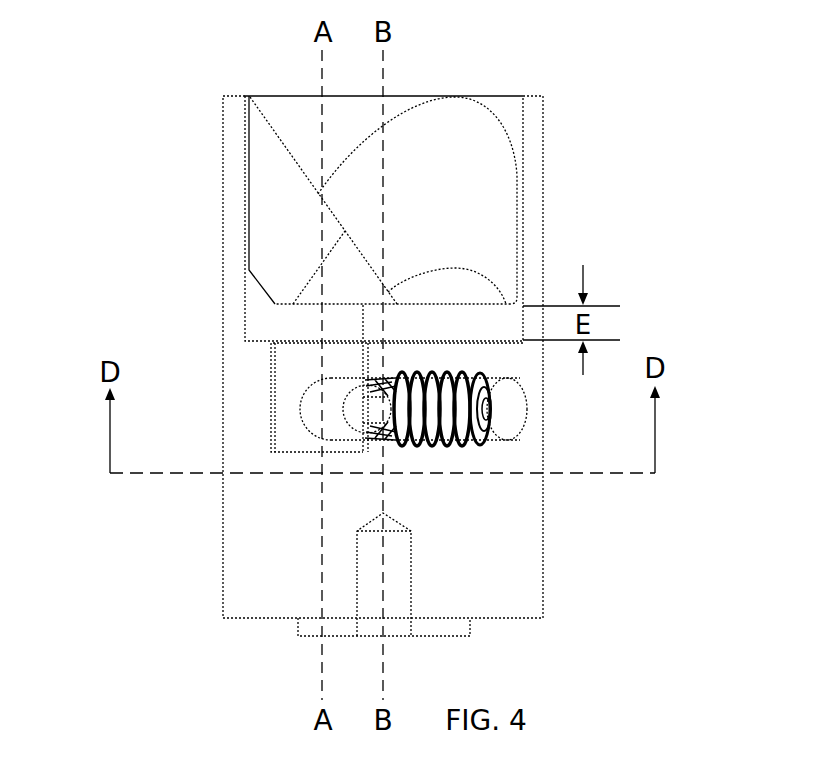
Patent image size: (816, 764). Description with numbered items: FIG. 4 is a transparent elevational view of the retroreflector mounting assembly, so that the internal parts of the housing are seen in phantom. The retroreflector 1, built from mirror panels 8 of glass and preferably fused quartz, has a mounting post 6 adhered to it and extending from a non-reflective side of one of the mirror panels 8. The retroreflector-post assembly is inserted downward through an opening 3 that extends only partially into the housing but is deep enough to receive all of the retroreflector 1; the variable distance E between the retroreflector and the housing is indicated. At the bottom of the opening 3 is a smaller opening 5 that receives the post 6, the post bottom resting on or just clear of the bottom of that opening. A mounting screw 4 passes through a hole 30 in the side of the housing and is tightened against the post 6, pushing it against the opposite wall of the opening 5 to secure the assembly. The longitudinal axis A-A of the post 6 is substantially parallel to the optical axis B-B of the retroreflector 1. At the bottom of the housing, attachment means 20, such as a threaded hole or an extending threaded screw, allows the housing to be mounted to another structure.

The retroreflector 1 is at (500, 118).
The opening 3 is at (428, 80).
The mounting screw 4 is at (440, 407).
The smaller opening 5 is at (273, 380).
The mounting post 6 is at (298, 320).
The mirror panels 8 is at (287, 172).
The attachment means 20 is at (395, 553).
The hole 30 is at (515, 402).